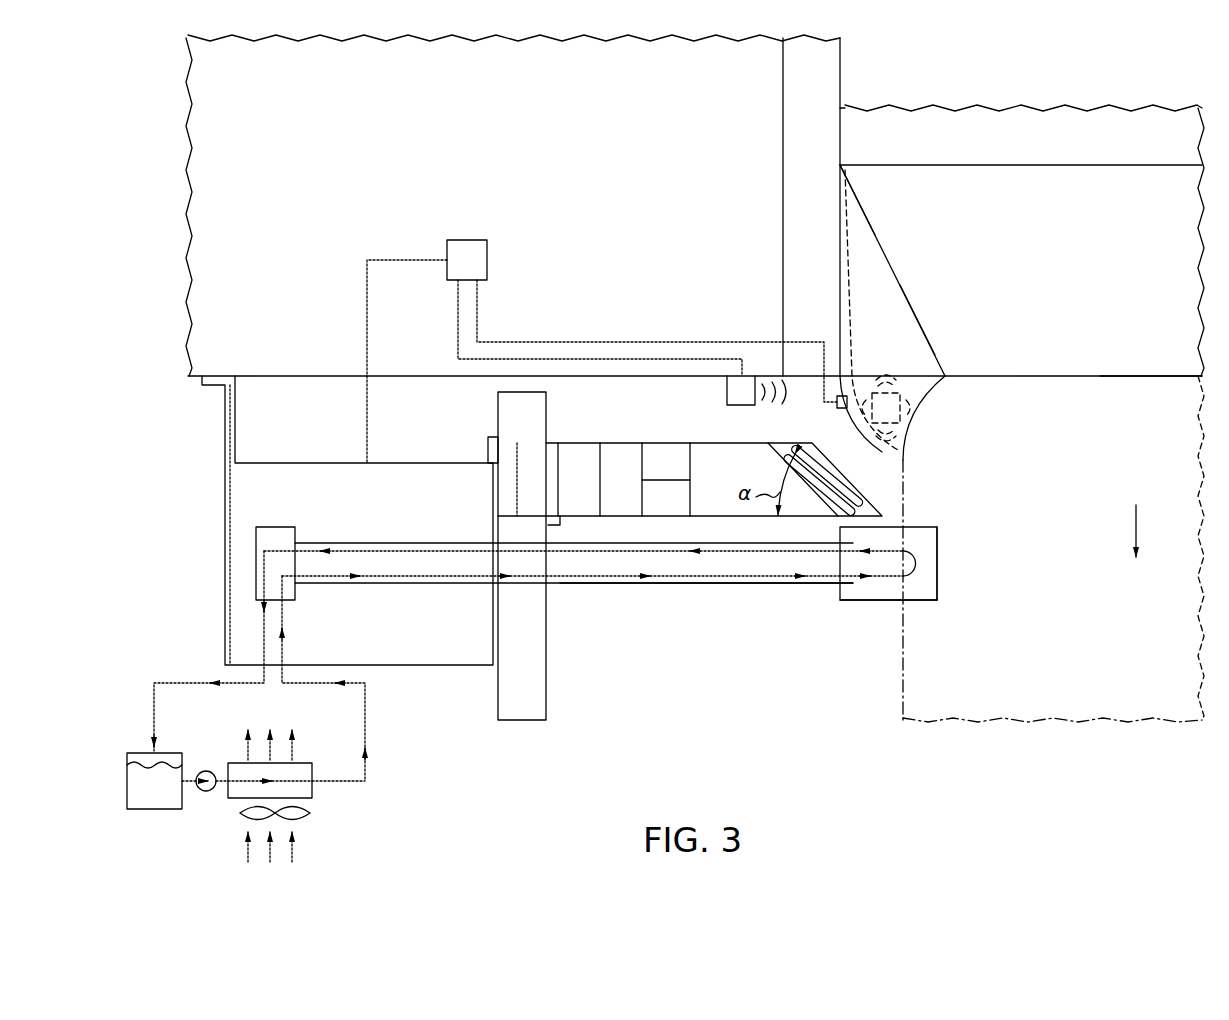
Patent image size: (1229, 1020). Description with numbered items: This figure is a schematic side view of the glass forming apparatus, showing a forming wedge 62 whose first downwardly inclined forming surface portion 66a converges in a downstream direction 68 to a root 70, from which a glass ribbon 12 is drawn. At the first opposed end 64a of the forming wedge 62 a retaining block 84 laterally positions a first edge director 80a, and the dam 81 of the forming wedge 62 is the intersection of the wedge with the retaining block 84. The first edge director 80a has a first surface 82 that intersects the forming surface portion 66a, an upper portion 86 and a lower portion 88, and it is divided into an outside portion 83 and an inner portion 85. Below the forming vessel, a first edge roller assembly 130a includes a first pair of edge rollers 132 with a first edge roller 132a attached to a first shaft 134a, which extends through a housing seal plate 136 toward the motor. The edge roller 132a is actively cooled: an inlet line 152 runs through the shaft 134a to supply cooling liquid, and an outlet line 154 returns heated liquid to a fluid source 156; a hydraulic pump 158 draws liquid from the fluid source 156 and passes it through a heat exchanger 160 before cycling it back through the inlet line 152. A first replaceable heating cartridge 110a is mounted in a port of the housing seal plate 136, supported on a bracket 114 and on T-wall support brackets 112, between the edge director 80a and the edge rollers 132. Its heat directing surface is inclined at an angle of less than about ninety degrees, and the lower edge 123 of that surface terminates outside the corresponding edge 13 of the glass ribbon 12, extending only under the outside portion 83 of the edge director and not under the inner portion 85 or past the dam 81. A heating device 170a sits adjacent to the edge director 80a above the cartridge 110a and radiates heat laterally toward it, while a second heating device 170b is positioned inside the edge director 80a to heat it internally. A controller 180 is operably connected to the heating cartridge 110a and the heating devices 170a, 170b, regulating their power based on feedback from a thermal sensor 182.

The glass ribbon 12 is at (1085, 722).
The edge of the glass ribbon 13 is at (903, 684).
The forming wedge 62 is at (1093, 76).
The first opposed end of the forming wedge 64a is at (898, 130).
The first downwardly inclined forming surface portion 66a is at (1021, 235).
The downstream direction 68 is at (1137, 530).
The root 70 is at (1158, 378).
The first edge director 80a is at (876, 213).
The dam of the forming wedge 81 is at (842, 62).
The first surface of the first edge director 82 is at (861, 358).
The outside portion of the first edge director 83 is at (837, 297).
The retaining block 84 is at (694, 205).
The inner portion of the first edge director 85 is at (936, 342).
The upper portion of the first edge director 86 is at (905, 300).
The lower portion of the first edge director 88 is at (912, 398).
The first replaceable heating cartridge 110a is at (782, 522).
The T-wall support brackets 112 is at (488, 445).
The bracket 114 is at (558, 522).
The lower edge of the heat directing surface 123 is at (866, 496).
The first edge roller assembly 130a is at (870, 592).
The first pair of edge rollers 132 is at (1004, 606).
The first edge roller 132a is at (928, 566).
The first shaft 134a is at (740, 586).
The housing seal plate 136 is at (529, 736).
The inlet line 152 is at (690, 586).
The outlet line 154 is at (696, 547).
The fluid source 156 is at (150, 812).
The hydraulic pump 158 is at (206, 792).
The heat exchanger 160 is at (320, 802).
The heating device 170a is at (727, 398).
The second heating device 170b is at (874, 392).
The controller 180 is at (488, 258).
The thermal sensor 182 is at (836, 408).